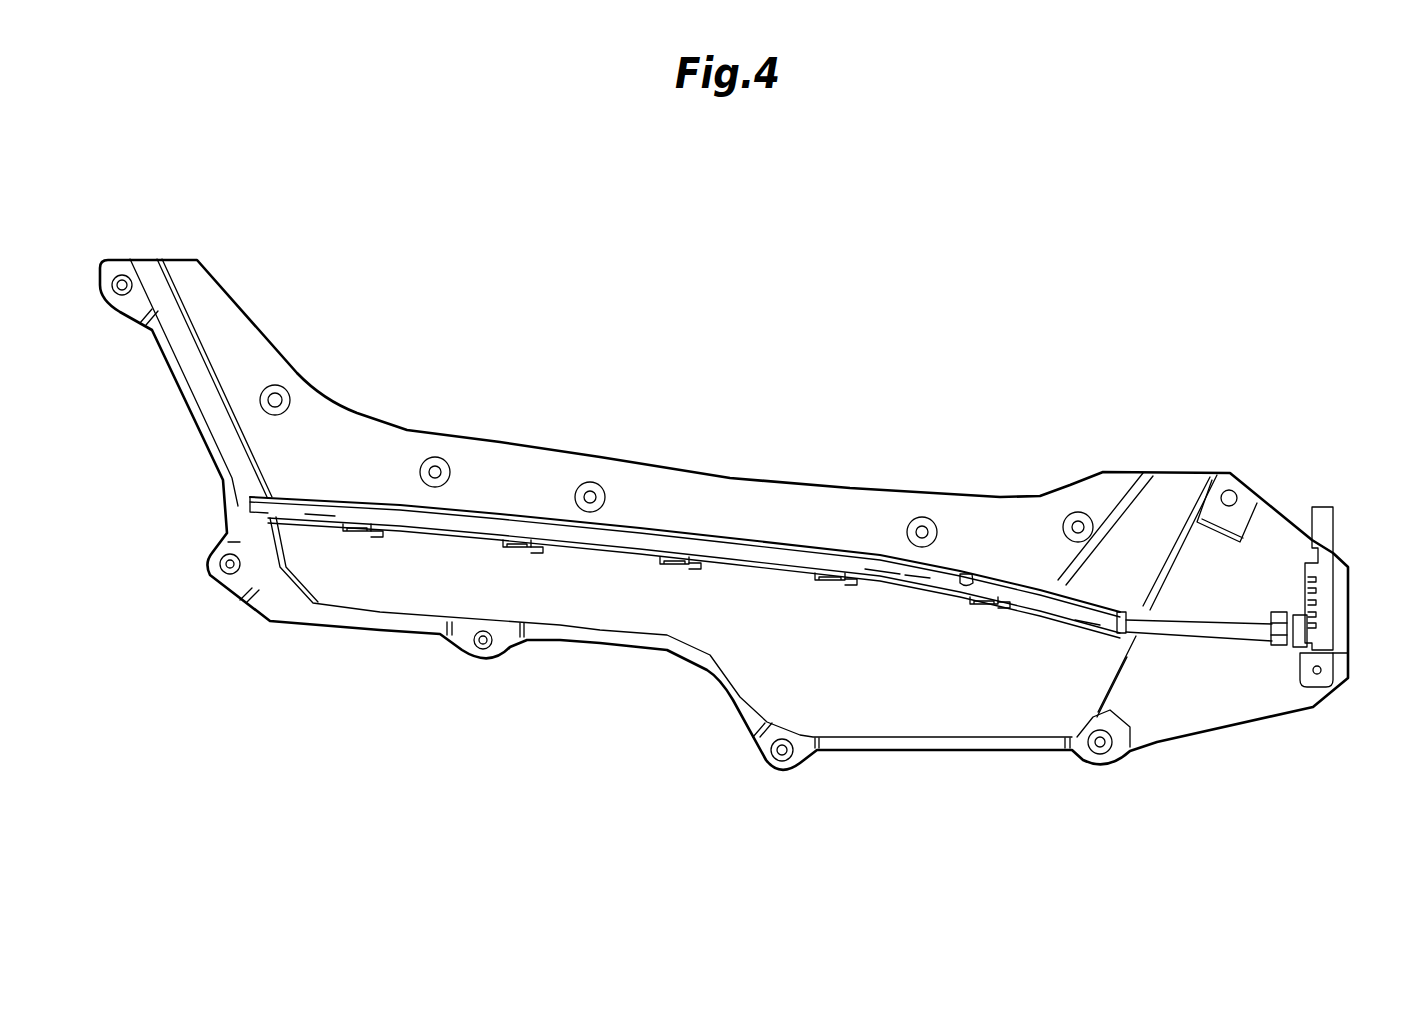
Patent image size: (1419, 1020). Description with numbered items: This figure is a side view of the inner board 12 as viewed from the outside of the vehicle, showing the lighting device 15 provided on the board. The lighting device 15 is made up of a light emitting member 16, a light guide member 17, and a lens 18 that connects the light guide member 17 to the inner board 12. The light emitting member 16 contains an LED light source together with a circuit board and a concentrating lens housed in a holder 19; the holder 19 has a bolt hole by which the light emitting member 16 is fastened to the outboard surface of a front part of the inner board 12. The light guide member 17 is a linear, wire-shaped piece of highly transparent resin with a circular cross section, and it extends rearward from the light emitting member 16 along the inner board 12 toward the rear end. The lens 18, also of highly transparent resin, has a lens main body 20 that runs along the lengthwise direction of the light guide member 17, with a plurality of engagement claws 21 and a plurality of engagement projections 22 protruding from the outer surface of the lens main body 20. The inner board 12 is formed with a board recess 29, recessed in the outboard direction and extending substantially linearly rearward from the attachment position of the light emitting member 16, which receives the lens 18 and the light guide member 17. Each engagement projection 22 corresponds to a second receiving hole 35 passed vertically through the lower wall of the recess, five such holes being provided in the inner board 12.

The inner board 12 is at (873, 722).
The lighting device 15 is at (1338, 571).
The light emitting member 16 is at (1327, 536).
The light guide member 17 is at (1203, 632).
The lens 18 is at (1110, 604).
The holder 19 is at (1320, 633).
The lens main body 20 is at (1080, 607).
The engagement claw 21 is at (288, 495).
The engagement projection 22 is at (375, 538).
The board recess 29 is at (973, 572).
The second receiving hole 35 is at (357, 532).